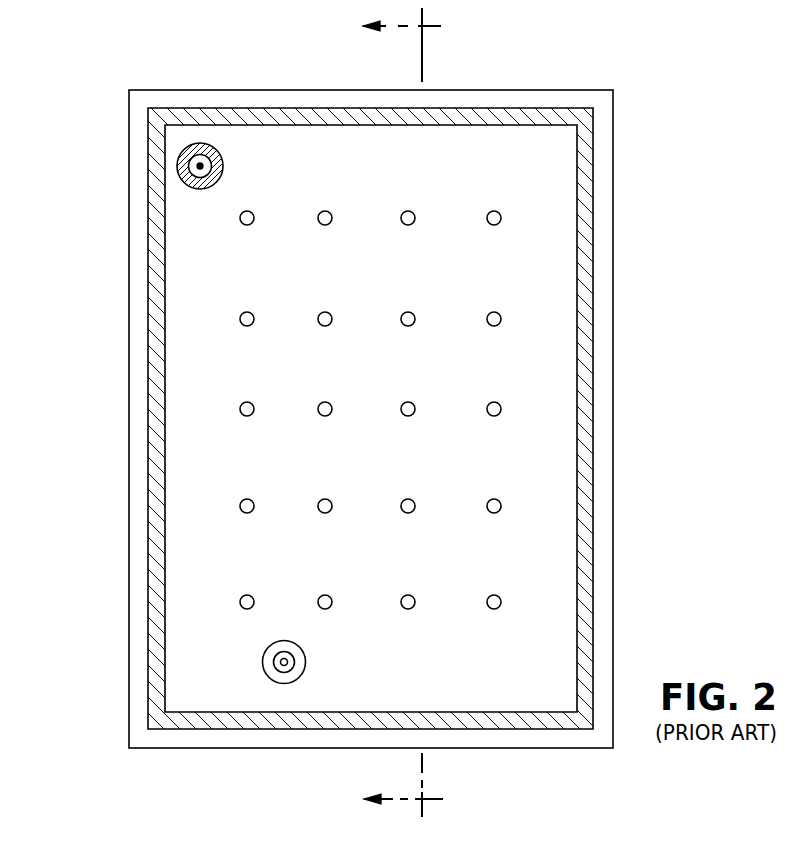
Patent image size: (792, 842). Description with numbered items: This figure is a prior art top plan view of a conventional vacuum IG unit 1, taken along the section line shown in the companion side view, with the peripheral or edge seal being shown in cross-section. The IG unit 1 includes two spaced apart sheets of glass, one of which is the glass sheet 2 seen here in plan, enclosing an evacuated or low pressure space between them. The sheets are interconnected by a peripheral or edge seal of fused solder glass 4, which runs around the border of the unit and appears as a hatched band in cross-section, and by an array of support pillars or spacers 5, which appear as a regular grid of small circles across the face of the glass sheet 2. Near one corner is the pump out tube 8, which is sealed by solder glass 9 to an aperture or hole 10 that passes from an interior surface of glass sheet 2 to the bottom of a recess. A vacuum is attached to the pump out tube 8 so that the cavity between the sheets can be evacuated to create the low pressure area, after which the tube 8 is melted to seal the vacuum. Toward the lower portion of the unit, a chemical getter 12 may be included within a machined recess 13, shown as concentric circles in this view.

The IG unit 1 is at (121, 628).
The sheet of glass 2 is at (363, 100).
The peripheral or edge seal of fused solder glass 4 is at (272, 116).
The support pillars or spacers 5 is at (502, 318).
The pump out tube 8 is at (198, 165).
The solder glass 9 is at (200, 190).
The aperture or hole 10 is at (189, 175).
The chemical getter 12 is at (276, 667).
The machined recess 13 is at (296, 661).